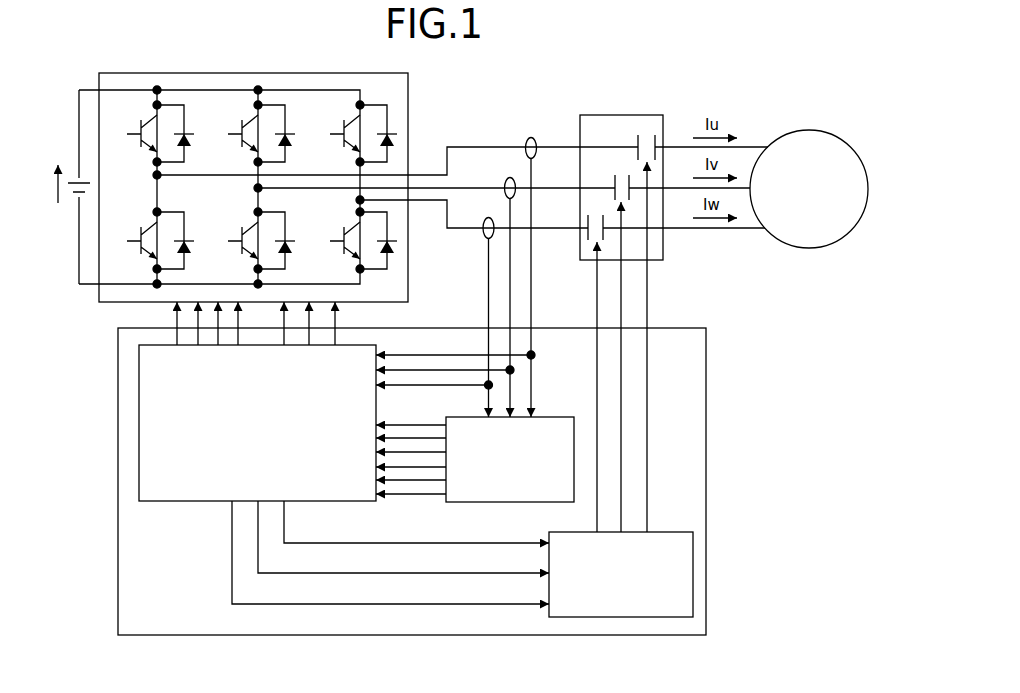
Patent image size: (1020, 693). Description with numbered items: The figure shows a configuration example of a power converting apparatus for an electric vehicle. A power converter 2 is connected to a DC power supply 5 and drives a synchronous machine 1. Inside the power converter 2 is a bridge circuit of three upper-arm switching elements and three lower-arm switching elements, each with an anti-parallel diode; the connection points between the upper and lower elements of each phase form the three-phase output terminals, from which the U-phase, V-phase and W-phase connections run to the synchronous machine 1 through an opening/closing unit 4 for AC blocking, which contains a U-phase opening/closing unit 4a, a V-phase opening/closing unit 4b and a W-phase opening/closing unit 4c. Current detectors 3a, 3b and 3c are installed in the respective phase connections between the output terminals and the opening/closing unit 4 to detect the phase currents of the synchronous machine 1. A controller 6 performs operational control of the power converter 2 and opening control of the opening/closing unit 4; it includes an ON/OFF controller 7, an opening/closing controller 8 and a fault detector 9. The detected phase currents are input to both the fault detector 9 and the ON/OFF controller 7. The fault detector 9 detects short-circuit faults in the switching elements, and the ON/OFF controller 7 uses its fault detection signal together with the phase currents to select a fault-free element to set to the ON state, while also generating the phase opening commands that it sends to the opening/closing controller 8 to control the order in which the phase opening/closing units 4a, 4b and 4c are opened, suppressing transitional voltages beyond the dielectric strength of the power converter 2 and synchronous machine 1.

The synchronous machine 1 is at (820, 131).
The power converter 2 is at (407, 95).
The U-phase current detector 3a is at (525, 140).
The V-phase current detector 3b is at (505, 182).
The W-phase current detector 3c is at (490, 220).
The opening/closing unit 4 is at (650, 115).
The U-phase opening/closing unit 4a is at (640, 140).
The V-phase opening/closing unit 4b is at (615, 178).
The W-phase opening/closing unit 4c is at (583, 220).
The DC power supply 5 is at (72, 177).
The controller 6 is at (688, 328).
The ON/OFF controller 7 is at (170, 503).
The opening/closing controller 8 is at (660, 532).
The fault detector 9 is at (548, 417).